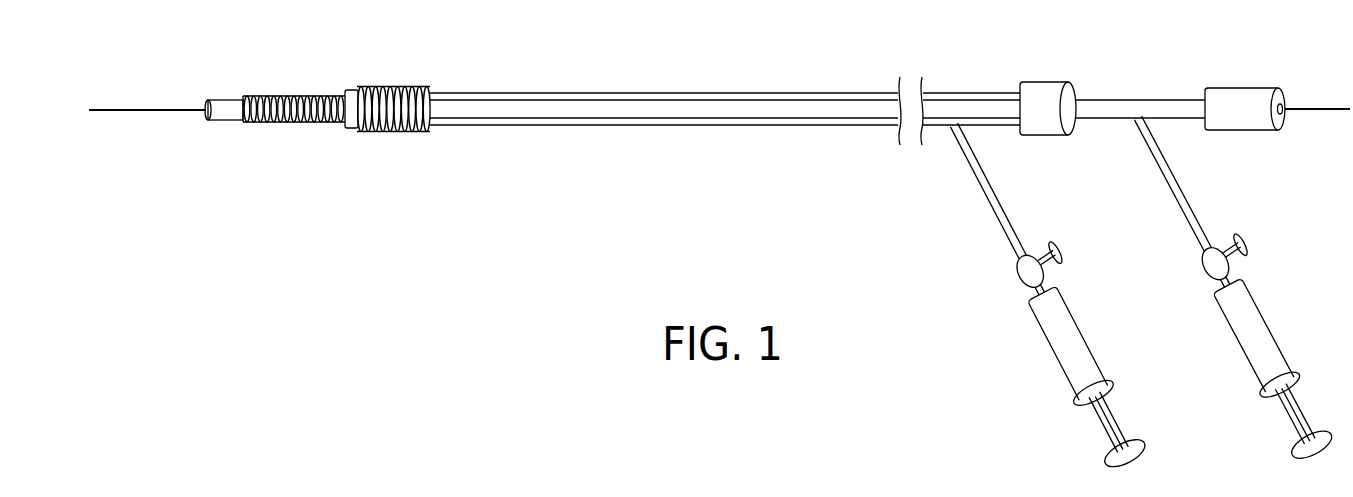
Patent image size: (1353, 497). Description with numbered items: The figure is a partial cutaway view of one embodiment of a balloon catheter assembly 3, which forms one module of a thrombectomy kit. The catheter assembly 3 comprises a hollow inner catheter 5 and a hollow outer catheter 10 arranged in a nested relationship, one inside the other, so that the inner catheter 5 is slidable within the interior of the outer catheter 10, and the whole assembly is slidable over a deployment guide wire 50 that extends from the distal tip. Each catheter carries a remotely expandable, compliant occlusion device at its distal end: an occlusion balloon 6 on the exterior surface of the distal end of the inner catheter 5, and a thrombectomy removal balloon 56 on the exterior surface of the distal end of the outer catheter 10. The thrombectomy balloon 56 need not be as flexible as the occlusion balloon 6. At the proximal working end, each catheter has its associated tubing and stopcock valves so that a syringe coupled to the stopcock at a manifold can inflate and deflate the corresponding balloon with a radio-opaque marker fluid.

The guide wire 50 is at (128, 112).
The occlusion balloon 6 is at (266, 95).
The thrombectomy balloon 56 is at (396, 86).
The inner catheter 5 is at (632, 110).
The catheter assembly 3 is at (716, 88).
The outer catheter 10 is at (806, 91).